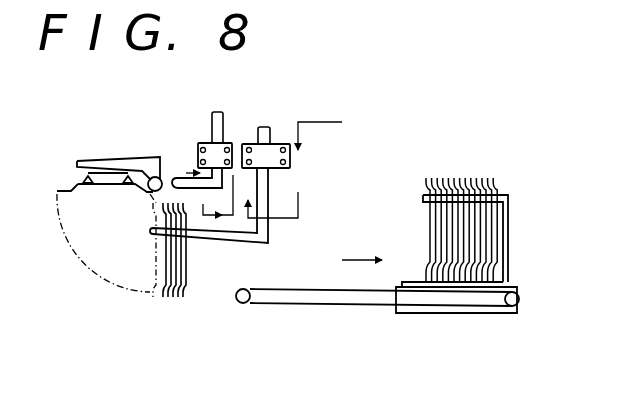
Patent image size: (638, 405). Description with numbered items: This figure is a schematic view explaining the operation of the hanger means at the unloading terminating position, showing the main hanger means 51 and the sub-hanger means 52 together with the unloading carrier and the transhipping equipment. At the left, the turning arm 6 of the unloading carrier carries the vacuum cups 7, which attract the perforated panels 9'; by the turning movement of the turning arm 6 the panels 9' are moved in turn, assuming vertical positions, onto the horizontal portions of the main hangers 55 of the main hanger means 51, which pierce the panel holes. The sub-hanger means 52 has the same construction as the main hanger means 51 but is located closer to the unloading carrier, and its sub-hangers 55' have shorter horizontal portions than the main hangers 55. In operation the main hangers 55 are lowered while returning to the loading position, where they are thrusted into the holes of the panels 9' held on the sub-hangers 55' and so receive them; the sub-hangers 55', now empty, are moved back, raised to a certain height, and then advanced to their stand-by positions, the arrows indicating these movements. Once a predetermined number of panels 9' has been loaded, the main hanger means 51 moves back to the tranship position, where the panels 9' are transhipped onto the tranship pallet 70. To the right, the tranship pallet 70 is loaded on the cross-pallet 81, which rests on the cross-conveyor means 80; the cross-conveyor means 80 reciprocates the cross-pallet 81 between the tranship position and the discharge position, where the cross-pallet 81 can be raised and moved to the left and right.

The turning arm 6 is at (105, 159).
The vacuum cups 7 is at (84, 181).
The perforated panels 9' is at (293, 237).
The main hanger means 51 is at (282, 129).
The sub-hanger means 52 is at (233, 116).
The main hangers 55 is at (231, 211).
The sub-hangers 55' is at (188, 150).
The tranship pallet 70 is at (508, 240).
The cross-conveyor means 80 is at (335, 306).
The cross-pallet 81 is at (450, 314).